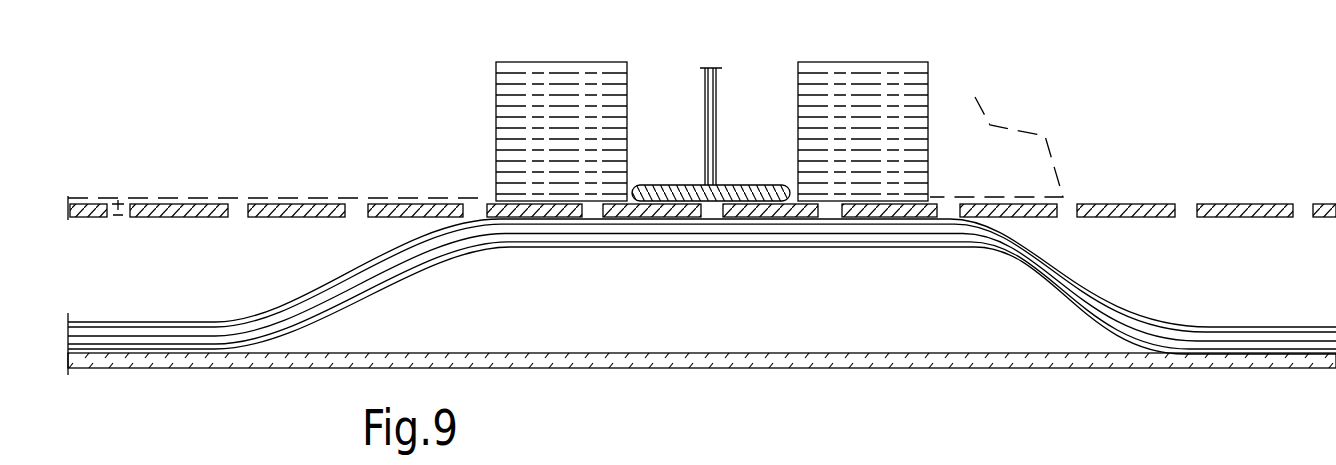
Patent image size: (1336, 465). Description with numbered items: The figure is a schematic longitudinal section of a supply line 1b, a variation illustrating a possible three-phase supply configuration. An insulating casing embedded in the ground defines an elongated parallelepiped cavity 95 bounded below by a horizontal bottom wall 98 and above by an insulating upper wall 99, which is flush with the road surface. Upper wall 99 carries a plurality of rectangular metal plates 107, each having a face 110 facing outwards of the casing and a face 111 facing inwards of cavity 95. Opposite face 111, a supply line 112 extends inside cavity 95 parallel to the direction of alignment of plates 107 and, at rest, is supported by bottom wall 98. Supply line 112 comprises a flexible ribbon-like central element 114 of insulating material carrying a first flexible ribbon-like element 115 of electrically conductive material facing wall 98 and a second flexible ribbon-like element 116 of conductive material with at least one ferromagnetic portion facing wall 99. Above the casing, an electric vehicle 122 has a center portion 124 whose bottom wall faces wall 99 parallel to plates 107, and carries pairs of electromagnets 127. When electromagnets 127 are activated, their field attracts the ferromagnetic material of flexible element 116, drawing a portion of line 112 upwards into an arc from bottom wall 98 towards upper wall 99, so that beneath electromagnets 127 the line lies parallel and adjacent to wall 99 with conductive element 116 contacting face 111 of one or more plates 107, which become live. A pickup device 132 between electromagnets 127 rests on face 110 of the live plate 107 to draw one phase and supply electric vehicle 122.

The supply line 1b is at (331, 116).
The elongated parallelepiped cavity 95 is at (1155, 234).
The horizontal bottom wall 98 is at (702, 329).
The insulating upper wall 99 is at (118, 200).
The rectangular metal plates 107 is at (176, 203).
The face 110 is at (309, 203).
The face 111 is at (310, 223).
The supply line 112 is at (280, 304).
The flexible ribbon-like central element 114 is at (377, 273).
The first flexible ribbon-like element 115 is at (465, 250).
The second flexible ribbon-like element 116 is at (165, 321).
The electric vehicle 122 is at (988, 123).
The center portion 124 is at (744, 86).
The electromagnets 127 is at (518, 55).
The pickup device 132 is at (676, 182).